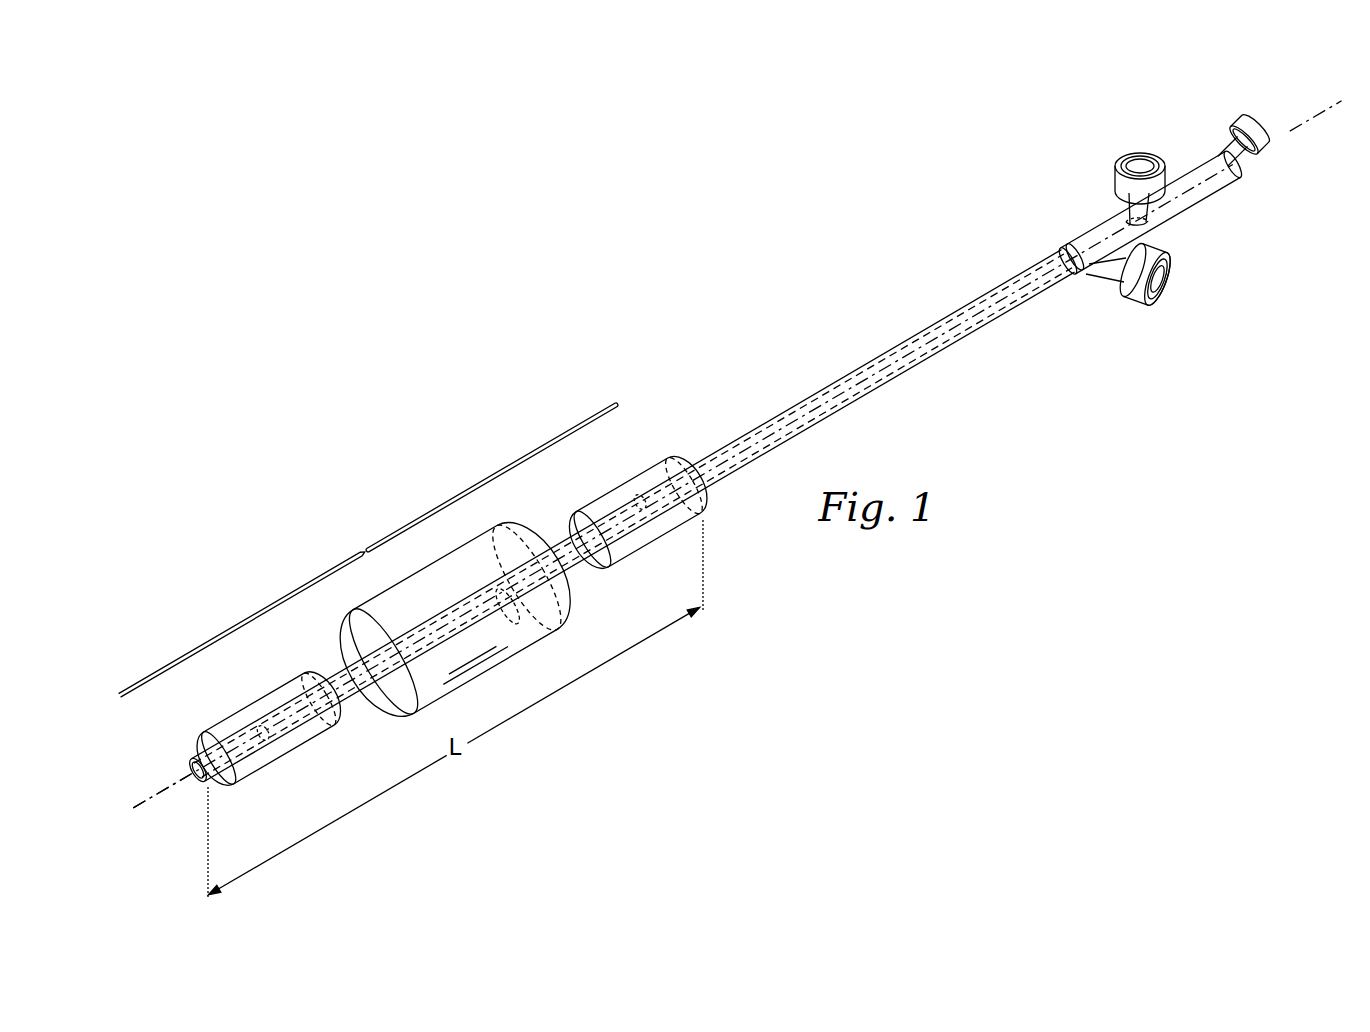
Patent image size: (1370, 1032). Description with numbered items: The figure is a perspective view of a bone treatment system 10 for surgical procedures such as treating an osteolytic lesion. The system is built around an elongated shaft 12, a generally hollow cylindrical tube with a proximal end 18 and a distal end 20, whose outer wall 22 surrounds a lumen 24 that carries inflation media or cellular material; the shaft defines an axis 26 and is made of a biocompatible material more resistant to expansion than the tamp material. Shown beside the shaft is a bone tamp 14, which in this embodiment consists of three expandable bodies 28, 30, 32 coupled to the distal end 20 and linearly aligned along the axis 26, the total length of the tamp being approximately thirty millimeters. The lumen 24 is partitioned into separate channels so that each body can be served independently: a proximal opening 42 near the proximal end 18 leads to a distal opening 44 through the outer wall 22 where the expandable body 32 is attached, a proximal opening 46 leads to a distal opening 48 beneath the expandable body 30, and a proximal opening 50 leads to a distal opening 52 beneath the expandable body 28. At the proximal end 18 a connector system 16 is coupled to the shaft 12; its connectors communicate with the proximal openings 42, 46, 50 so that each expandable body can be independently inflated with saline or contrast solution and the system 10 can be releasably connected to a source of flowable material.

The bone treatment system 10 is at (762, 377).
The elongated shaft 12 is at (895, 347).
The bone tamp 14 is at (362, 549).
The connector system 16 is at (1081, 170).
The proximal end 18 is at (1202, 135).
The distal end 20 is at (193, 797).
The outer wall 22 is at (848, 393).
The lumen 24 is at (1240, 173).
The axis 26 is at (173, 777).
The expandable body 28 is at (302, 673).
The expandable body 30 is at (522, 528).
The expandable body 32 is at (673, 458).
The proximal opening 42 is at (1187, 173).
The distal opening 44 is at (640, 500).
The proximal opening 46 is at (1157, 227).
The distal opening 48 is at (527, 642).
The proximal opening 50 is at (1090, 273).
The distal opening 52 is at (278, 757).